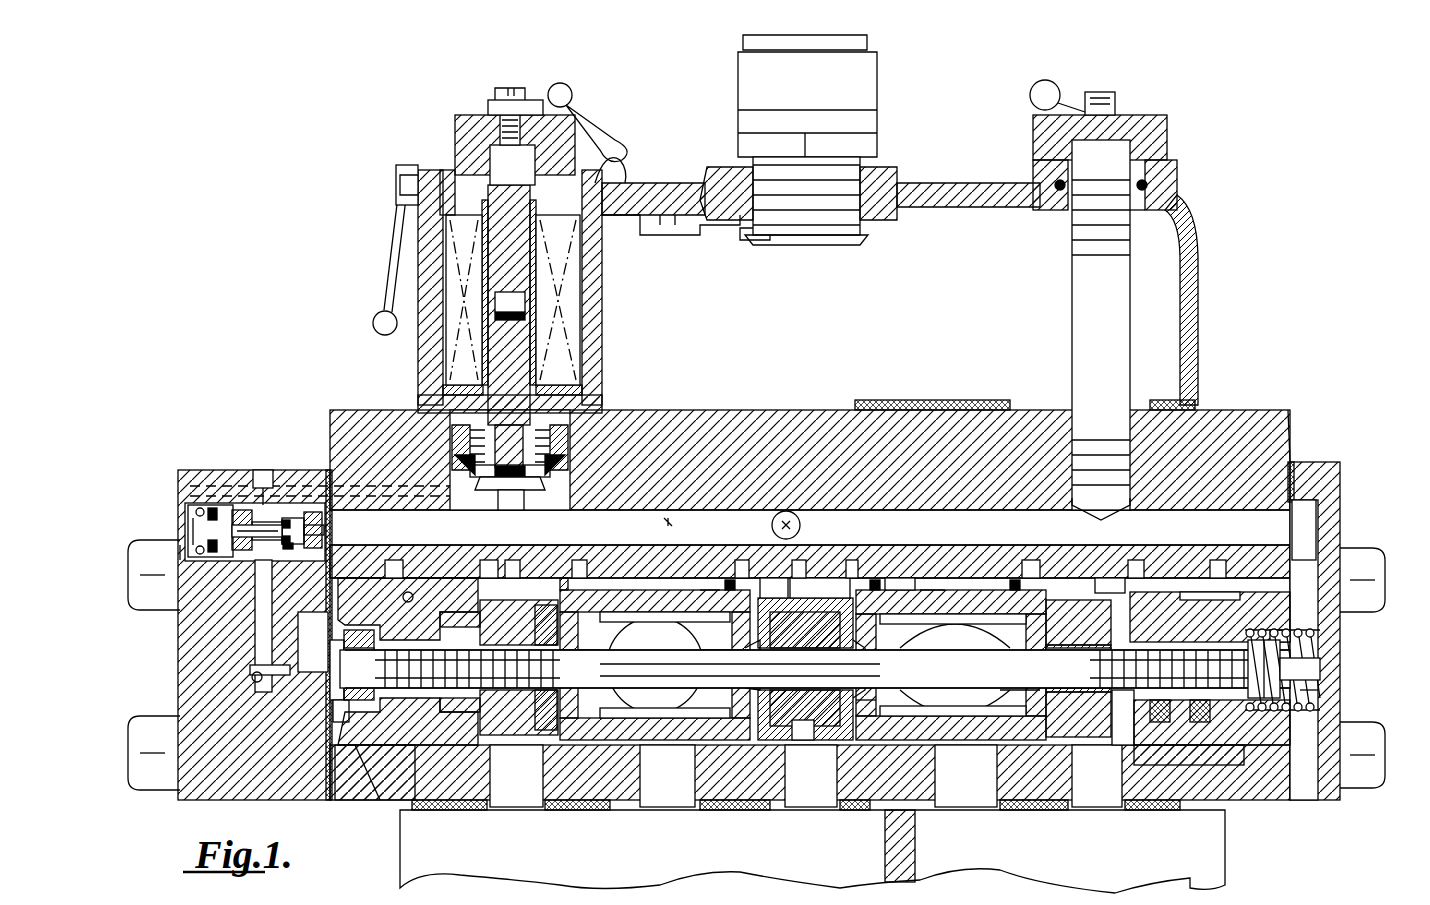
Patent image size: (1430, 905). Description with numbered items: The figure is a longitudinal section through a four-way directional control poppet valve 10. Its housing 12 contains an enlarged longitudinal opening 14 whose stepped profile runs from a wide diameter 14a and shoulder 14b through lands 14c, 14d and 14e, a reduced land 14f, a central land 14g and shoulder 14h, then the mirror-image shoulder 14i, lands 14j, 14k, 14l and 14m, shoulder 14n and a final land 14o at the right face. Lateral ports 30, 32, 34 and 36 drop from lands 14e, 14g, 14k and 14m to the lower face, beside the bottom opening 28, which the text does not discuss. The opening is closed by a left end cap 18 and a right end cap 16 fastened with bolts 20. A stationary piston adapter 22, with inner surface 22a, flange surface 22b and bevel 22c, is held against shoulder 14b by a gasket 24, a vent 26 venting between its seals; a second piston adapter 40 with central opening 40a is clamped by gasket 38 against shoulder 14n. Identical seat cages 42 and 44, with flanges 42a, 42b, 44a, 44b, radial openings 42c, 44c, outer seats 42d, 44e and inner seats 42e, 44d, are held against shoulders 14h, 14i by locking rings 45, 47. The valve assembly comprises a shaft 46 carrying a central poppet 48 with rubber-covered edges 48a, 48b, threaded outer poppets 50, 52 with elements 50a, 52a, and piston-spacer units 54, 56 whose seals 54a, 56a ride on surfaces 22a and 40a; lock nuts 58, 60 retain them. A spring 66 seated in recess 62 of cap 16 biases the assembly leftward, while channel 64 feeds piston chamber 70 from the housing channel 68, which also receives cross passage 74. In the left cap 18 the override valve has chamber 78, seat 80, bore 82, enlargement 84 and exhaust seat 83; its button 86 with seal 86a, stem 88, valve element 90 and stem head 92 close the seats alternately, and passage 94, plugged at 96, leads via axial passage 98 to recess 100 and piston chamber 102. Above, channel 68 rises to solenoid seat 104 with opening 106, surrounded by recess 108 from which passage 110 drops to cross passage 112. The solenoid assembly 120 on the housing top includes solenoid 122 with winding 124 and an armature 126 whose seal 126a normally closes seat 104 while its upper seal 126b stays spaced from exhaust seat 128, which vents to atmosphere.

The valve 10 is at (1312, 424).
The housing 12 is at (1240, 404).
The enlarged opening 14 is at (832, 588).
The wide diameter 14a is at (395, 560).
The shoulder 14b is at (490, 560).
The cylindrical land 14c is at (512, 560).
The land of reduced diameter 14d is at (580, 560).
The cylindrical land 14e is at (692, 590).
The reduced land 14f is at (740, 560).
The central land 14g is at (800, 578).
The shoulder 14h is at (770, 585).
The outward radial shoulder 14i is at (852, 578).
The cylindrical land 14j is at (900, 578).
The outward cylindrical land 14k is at (946, 590).
The land of reduced diameter 14l is at (1032, 560).
The outer land 14m is at (1108, 578).
The radial shoulder 14n is at (1136, 570).
The final cylindrical land 14o is at (1218, 578).
The right end cap 16 is at (1342, 510).
The left end cap 18 is at (178, 652).
The bolts 20 is at (135, 600).
The stationary piston adapter 22 is at (478, 562).
The inward cylindrical surface 22a is at (408, 592).
The cylindrical surface 22b is at (485, 606).
The bevel 22c is at (440, 735).
The gasket 24 is at (331, 470).
The vent 26 is at (388, 800).
The port 28 is at (505, 790).
The lateral port 30 is at (648, 785).
The laterally extending port 32 is at (800, 785).
The lateral port 34 is at (968, 790).
The lateral port 36 is at (1128, 795).
The gasket 38 is at (1292, 468).
The second piston adapter 40 is at (1210, 613).
The central opening 40a is at (1240, 615).
The seat cage 42 is at (618, 600).
The outward flange 42a is at (572, 601).
The outward flange 42b is at (728, 580).
The radial openings 42c is at (665, 667).
The outer bevelled seat 42d is at (580, 680).
The inner bevelled seat 42e is at (675, 680).
The seat cage 44 is at (900, 612).
The outward flange 44a is at (878, 583).
The outward flange 44b is at (1020, 582).
The radial openings 44c is at (953, 669).
The inner bevelled seat 44d is at (872, 708).
The outer bevelled seat 44e is at (1030, 690).
The locking ring 45 is at (578, 808).
The shaft 46 is at (1290, 673).
The locking ring 47 is at (1128, 760).
The central poppet 48 is at (800, 725).
The rubber-covered valve edge element 48a is at (756, 645).
The rubber-covered valve edge element 48b is at (855, 625).
The outer poppet element 50 is at (532, 745).
The rubber-covered valve element 50a is at (560, 628).
The outer poppet element 52 is at (1090, 726).
The rubber-covered valve element 52a is at (1065, 668).
The piston-spacer unit 54 is at (355, 708).
The seal 54a is at (370, 778).
The piston-spacer unit 56 is at (1258, 725).
The sealing means 56a is at (1185, 720).
The lock nut 58 is at (345, 690).
The lock nut 60 is at (1305, 686).
The circular recess 62 is at (1322, 642).
The outer channel 64 is at (1316, 530).
The axial spring 66 is at (1320, 684).
The longitudinally disposed channel 68 is at (672, 522).
The piston chamber 70 is at (1300, 715).
The cross passage 74 is at (790, 512).
The chamber 78 is at (315, 500).
The annular seat 80 is at (290, 508).
The continuing bore 82 is at (258, 506).
The override exhaust seat 83 is at (180, 552).
The enlargement 84 is at (235, 506).
The operating button 86 is at (190, 524).
The seal 86a is at (186, 512).
The stem 88 is at (258, 535).
The valve element 90 is at (283, 548).
The stem head 92 is at (322, 529).
The passage 94 is at (258, 603).
The plug 96 is at (262, 470).
The axial passage 98 is at (252, 678).
The recess 100 is at (304, 640).
The piston chamber 102 is at (340, 718).
The solenoid seat 104 is at (530, 498).
The opening 106 is at (556, 490).
The circular recess 108 is at (560, 472).
The passage 110 is at (482, 485).
The cross passage 112 is at (385, 492).
The solenoid assembly 120 is at (658, 182).
The solenoid 122 is at (580, 320).
The magnetic winding 124 is at (565, 292).
The valve element-armature 126 is at (530, 372).
The seal 126a is at (560, 440).
The seal 126b is at (540, 318).
The exhaust seat 128 is at (495, 312).